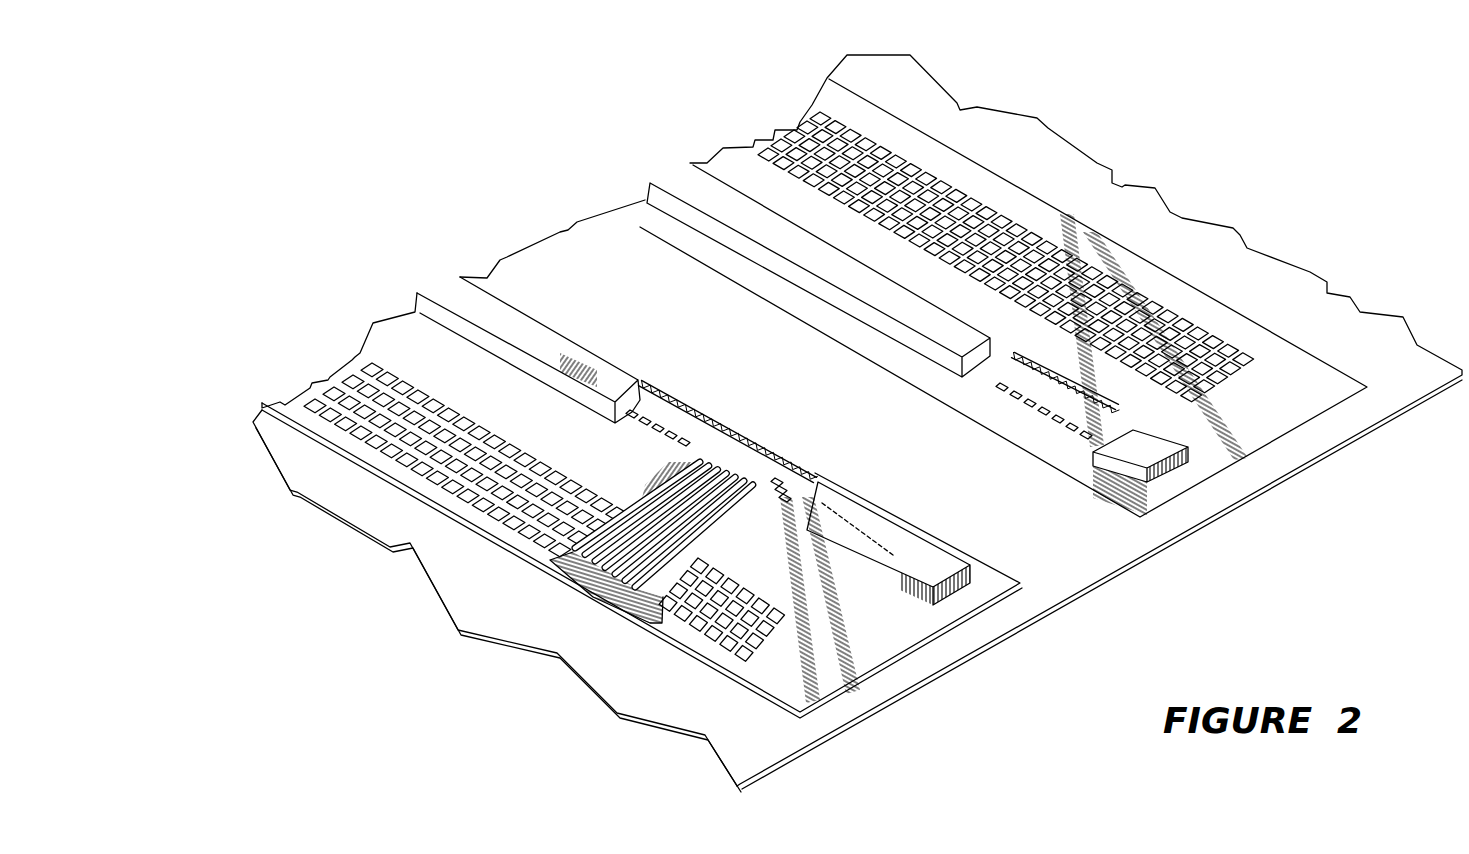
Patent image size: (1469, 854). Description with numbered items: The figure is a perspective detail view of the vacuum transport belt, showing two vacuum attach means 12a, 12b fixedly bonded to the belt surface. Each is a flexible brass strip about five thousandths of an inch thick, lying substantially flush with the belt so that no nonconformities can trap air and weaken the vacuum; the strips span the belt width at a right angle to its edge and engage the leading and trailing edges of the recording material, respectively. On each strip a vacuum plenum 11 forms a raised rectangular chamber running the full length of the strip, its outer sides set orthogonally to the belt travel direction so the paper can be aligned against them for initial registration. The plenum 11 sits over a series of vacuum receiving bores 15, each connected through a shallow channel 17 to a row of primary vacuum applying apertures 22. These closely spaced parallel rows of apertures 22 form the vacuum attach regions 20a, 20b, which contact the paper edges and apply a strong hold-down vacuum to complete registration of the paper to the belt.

The vacuum plenum 11 is at (950, 588).
The vacuum attach means 12a is at (863, 673).
The vacuum attach means 12b is at (1213, 475).
The vacuum receiving bores 15 is at (781, 496).
The channels 17 is at (740, 487).
The vacuum attach region 20a is at (615, 660).
The vacuum attach region 20b is at (1110, 197).
The primary vacuum applying apertures 22 is at (737, 637).